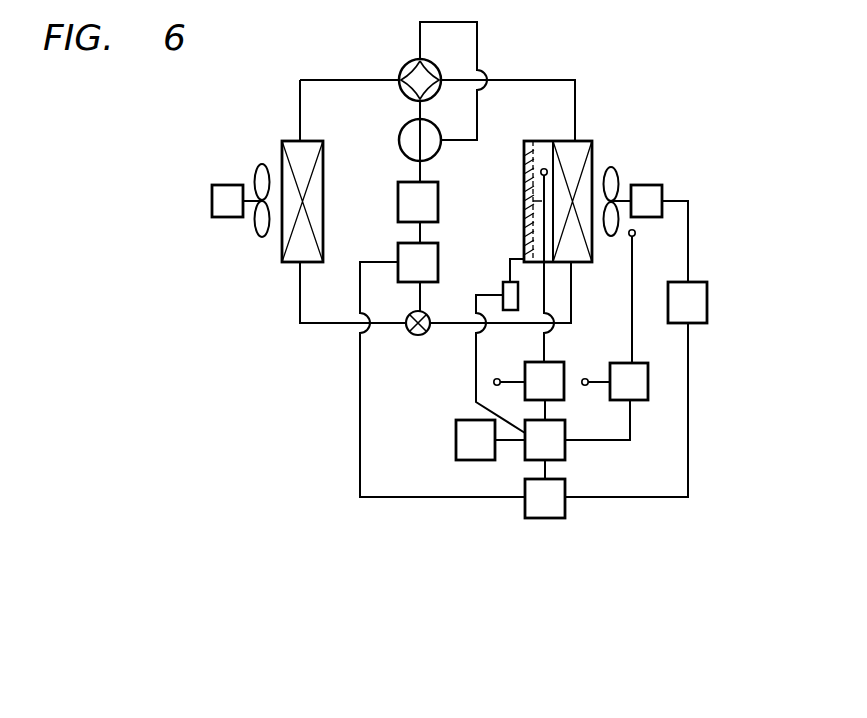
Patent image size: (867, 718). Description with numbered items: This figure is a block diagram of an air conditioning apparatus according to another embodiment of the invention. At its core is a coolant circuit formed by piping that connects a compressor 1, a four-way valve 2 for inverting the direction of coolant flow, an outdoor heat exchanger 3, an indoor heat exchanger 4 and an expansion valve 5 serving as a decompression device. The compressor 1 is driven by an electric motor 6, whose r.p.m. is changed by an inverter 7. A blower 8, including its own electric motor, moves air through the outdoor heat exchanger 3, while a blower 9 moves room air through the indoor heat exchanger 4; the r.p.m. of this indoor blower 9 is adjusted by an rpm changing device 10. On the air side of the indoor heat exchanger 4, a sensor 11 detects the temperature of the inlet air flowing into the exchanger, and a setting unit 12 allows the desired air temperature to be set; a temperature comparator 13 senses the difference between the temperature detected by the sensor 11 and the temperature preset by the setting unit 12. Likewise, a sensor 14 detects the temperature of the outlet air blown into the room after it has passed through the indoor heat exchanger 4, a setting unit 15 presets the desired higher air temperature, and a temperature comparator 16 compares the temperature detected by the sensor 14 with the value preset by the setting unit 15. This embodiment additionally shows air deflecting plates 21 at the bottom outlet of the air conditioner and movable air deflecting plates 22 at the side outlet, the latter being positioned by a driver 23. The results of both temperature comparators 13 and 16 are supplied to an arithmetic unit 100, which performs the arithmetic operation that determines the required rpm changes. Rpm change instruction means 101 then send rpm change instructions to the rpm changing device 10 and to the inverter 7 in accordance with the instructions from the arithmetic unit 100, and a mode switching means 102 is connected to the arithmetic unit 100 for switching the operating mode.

The compressor 1 is at (401, 132).
The four-way valve 2 is at (407, 64).
The outdoor heat exchanger 3 is at (291, 139).
The indoor heat exchanger 4 is at (594, 148).
The expansion valve 5 is at (413, 335).
The electric motor 6 is at (441, 200).
The inverter 7 is at (397, 261).
The blower for the outdoor heat exchanger 8 is at (236, 184).
The blower for the indoor heat exchanger 9 is at (655, 184).
The rpm changing device 10 is at (698, 282).
The inlet air temperature sensor 11 is at (544, 168).
The setting unit 12 is at (506, 369).
The temperature comparator 13 is at (566, 392).
The outlet air temperature sensor 14 is at (646, 292).
The setting unit 15 is at (593, 369).
The temperature comparator 16 is at (648, 392).
The air deflecting plates 21 is at (522, 170).
The movable air deflecting plates 22 is at (522, 245).
The driver 23 is at (503, 292).
The arithmetic unit 100 is at (565, 448).
The rpm change instruction means 101 is at (565, 505).
The mode switching means 102 is at (456, 435).